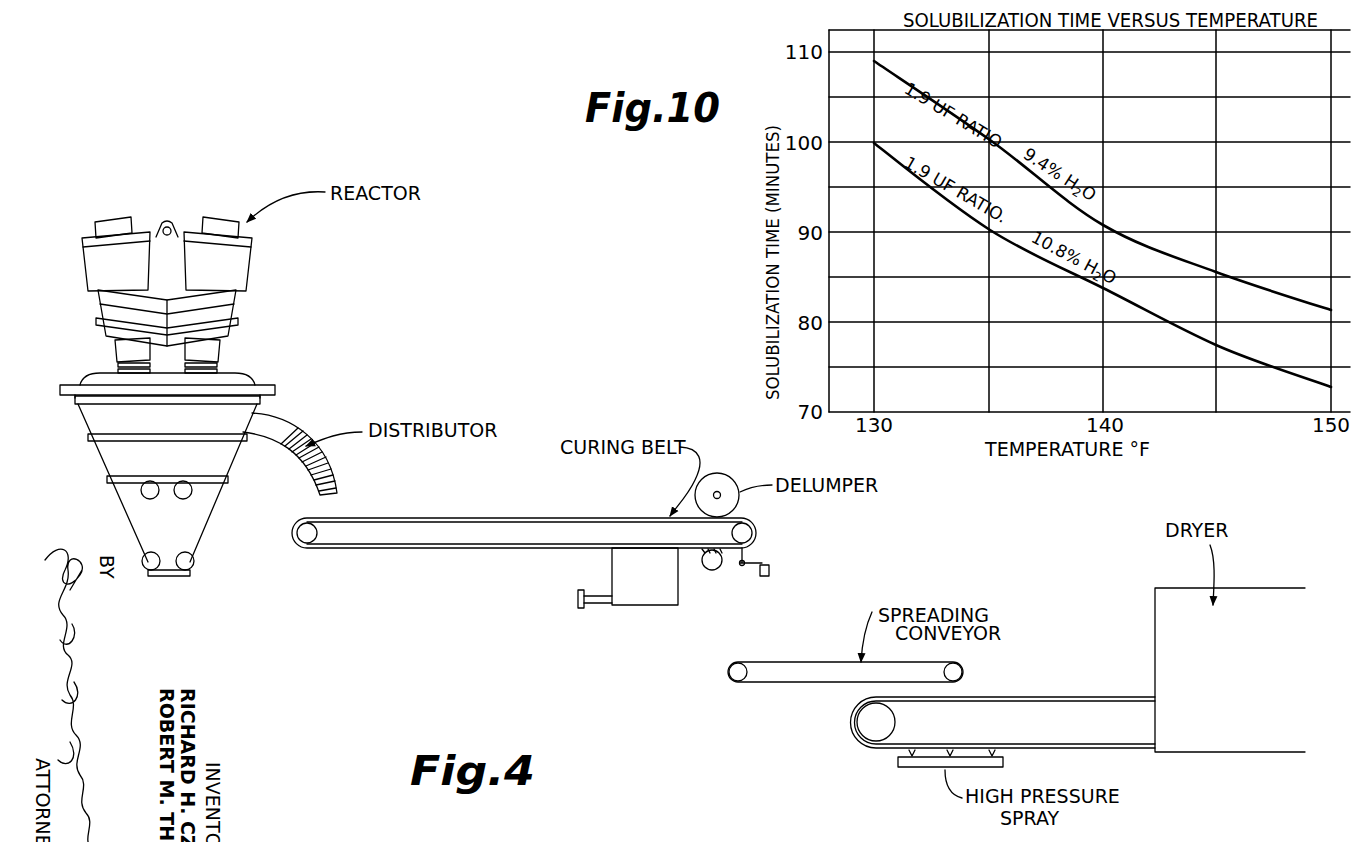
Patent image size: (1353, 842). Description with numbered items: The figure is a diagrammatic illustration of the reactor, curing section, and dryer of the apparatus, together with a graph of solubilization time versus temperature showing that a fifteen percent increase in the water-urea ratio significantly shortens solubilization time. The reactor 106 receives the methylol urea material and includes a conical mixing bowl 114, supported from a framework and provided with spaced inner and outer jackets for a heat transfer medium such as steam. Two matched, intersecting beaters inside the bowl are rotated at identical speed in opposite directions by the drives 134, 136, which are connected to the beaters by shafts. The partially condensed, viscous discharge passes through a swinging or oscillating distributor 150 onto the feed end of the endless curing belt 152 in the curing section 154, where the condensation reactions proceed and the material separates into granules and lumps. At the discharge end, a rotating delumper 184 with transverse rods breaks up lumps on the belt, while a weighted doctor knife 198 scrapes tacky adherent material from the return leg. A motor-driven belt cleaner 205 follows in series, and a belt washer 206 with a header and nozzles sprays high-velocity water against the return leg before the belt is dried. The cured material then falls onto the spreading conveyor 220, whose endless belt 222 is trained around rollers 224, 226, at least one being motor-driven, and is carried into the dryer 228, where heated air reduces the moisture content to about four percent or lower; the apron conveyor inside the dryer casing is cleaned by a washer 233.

The reactor 106 is at (252, 361).
The mixing bowl 114 is at (110, 465).
The drive 134 is at (248, 259).
The drive 136 is at (83, 256).
The distributor 150 is at (270, 432).
The curing belt 152 is at (441, 519).
The curing section 154 is at (537, 508).
The delumper 184 is at (728, 481).
The doctor knife 198 is at (760, 565).
The belt cleaner 205 is at (713, 570).
The belt washer 206 is at (624, 606).
The spreading conveyor 220 is at (769, 656).
The endless belt 222 is at (820, 661).
The roller 224 is at (728, 676).
The roller 226 is at (984, 692).
The dryer 228 is at (1170, 582).
The washer 233 is at (898, 768).